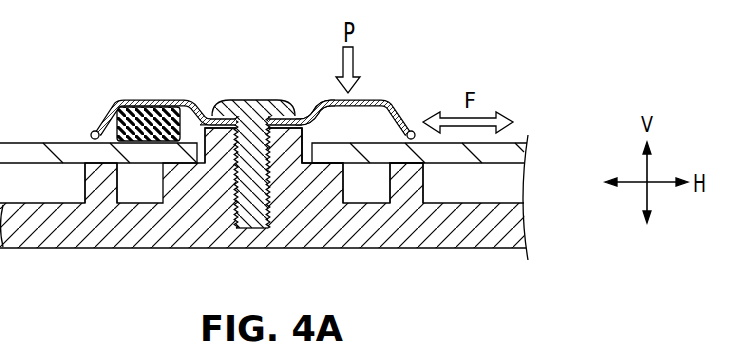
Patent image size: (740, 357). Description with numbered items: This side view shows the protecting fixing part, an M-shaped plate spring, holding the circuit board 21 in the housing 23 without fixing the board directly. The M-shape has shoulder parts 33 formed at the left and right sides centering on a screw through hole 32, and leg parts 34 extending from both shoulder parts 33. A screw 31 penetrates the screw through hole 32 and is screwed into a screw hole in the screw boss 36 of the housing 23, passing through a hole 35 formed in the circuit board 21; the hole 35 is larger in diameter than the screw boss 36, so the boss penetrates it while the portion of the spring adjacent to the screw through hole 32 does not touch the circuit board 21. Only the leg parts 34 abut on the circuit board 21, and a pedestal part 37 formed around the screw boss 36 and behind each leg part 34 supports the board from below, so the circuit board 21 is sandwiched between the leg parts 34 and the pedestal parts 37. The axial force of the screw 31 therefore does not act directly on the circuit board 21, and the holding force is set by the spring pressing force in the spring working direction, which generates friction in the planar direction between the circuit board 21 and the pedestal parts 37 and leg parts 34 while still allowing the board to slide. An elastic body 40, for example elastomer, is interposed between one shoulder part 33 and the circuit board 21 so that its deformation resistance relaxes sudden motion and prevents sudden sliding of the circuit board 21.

The circuit board 21 is at (45, 155).
The housing 23 is at (485, 236).
The screw 31 is at (258, 100).
The screw through hole 32 is at (238, 99).
The shoulder parts 33 is at (163, 100).
The leg parts 34 is at (96, 129).
The hole 35 is at (320, 110).
The screw boss 36 is at (218, 148).
The pedestal part 37 is at (424, 178).
The elastic body 40 is at (122, 108).